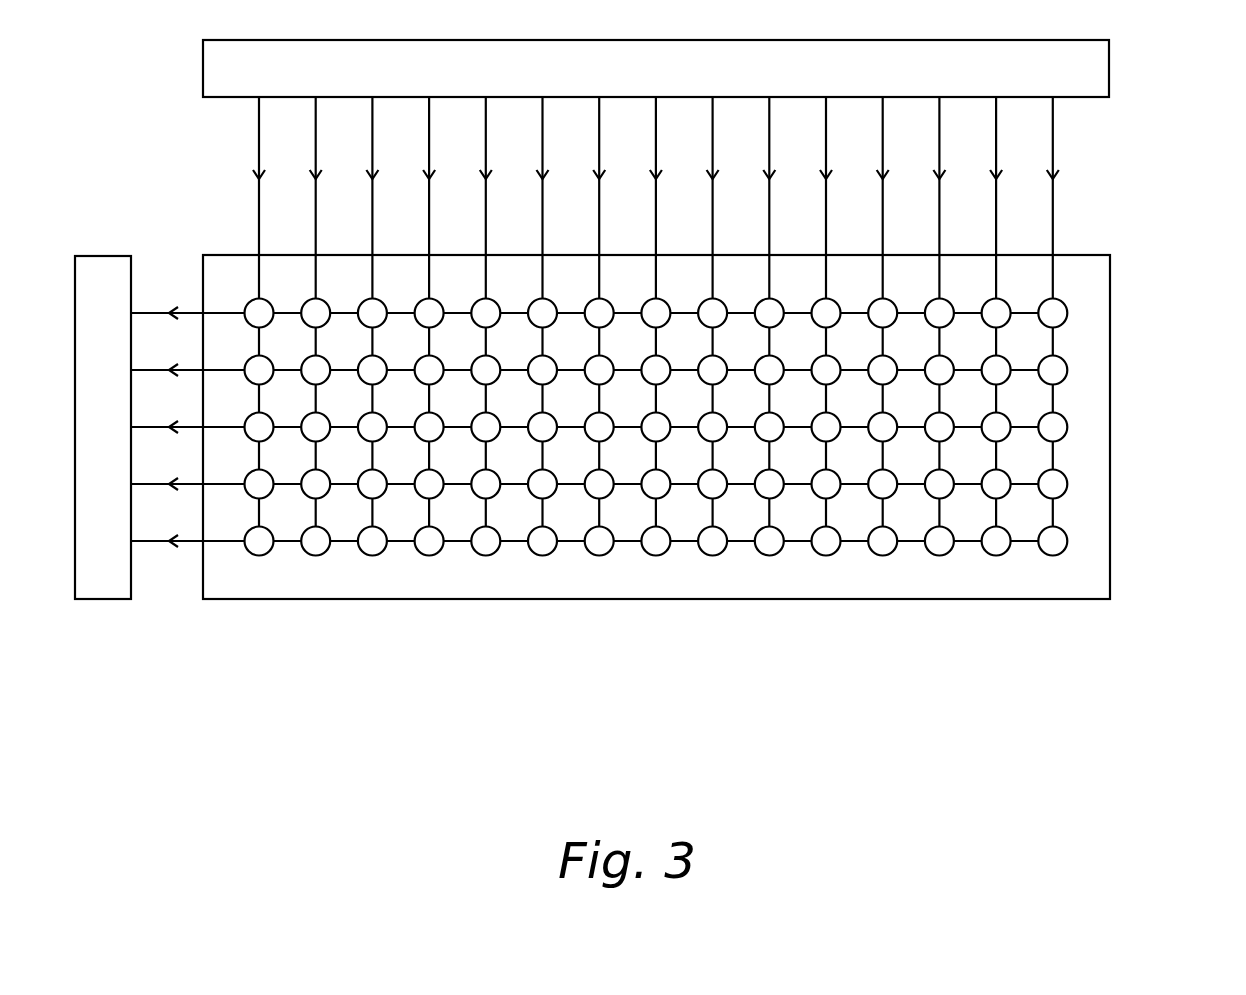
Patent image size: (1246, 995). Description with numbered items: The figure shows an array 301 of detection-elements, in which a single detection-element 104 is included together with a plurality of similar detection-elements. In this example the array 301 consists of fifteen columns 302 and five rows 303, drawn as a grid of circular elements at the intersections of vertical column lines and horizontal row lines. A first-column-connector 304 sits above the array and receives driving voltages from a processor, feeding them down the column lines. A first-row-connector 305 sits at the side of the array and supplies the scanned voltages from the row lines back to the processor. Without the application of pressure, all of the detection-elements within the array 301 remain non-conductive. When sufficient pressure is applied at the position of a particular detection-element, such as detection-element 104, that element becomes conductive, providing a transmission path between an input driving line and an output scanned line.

The detection-element 104 is at (254, 310).
The array of detection-elements 301 is at (620, 408).
The columns 302 is at (620, 418).
The rows 303 is at (1110, 255).
The first-column-connector 304 is at (1103, 68).
The first-row-connector 305 is at (103, 590).